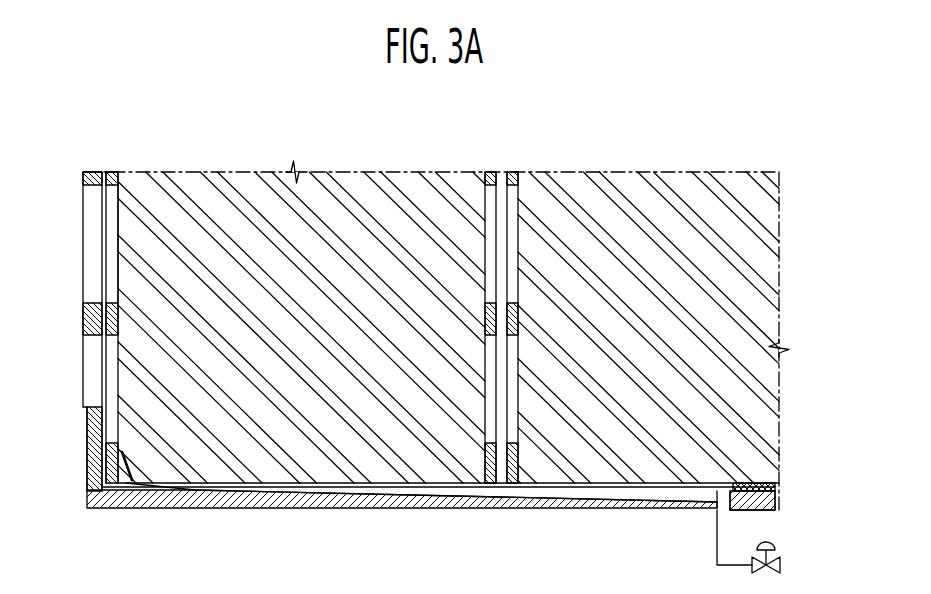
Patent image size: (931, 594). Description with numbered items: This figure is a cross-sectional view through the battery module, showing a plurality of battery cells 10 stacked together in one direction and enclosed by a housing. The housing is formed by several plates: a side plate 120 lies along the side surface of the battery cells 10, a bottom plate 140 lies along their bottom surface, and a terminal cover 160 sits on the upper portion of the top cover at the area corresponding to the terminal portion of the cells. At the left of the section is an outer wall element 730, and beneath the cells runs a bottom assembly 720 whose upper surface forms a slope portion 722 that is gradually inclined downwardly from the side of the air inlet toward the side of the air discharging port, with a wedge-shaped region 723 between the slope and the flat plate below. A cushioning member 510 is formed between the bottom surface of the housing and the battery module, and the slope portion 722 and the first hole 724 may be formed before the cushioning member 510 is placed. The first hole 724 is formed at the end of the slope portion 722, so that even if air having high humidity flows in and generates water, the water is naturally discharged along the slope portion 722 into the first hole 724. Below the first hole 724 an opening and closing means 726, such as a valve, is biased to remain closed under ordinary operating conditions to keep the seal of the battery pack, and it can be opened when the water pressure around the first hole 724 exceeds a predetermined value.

The battery cell 10 is at (376, 171).
The side plate 120 is at (118, 223).
The bottom plate 140 is at (131, 484).
The terminal cover 160 is at (113, 171).
The cushioning member 510 is at (760, 482).
The bottom plate 720 is at (167, 509).
The slope portion 722 is at (456, 493).
The wedge plate 723 is at (305, 488).
The first hole 724 is at (717, 492).
The opening and closing means 726 is at (781, 565).
The outer wall 730 is at (96, 171).